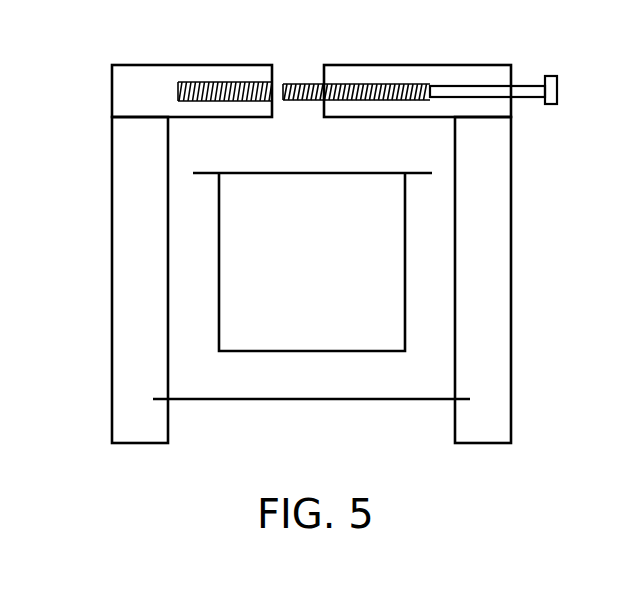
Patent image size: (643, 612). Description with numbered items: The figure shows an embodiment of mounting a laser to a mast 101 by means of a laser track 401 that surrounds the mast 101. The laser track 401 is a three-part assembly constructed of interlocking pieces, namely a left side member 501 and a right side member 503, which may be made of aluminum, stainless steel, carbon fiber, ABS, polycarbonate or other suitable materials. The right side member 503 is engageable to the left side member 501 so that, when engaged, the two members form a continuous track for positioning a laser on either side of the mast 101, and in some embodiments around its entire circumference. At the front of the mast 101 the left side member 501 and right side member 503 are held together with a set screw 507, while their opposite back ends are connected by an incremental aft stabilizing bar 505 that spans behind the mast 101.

The laser track 401 is at (546, 220).
The left side member 501 is at (122, 360).
The right side member 503 is at (497, 358).
The incremental aft stabilizing bar 505 is at (213, 400).
The set screw 507 is at (531, 90).
The mast 101 is at (338, 273).